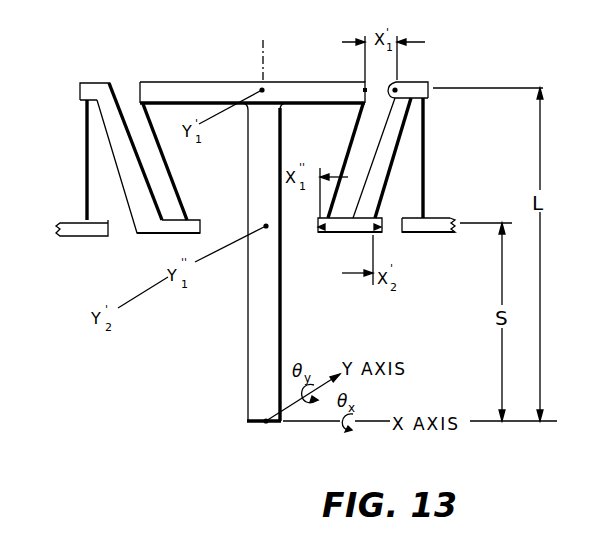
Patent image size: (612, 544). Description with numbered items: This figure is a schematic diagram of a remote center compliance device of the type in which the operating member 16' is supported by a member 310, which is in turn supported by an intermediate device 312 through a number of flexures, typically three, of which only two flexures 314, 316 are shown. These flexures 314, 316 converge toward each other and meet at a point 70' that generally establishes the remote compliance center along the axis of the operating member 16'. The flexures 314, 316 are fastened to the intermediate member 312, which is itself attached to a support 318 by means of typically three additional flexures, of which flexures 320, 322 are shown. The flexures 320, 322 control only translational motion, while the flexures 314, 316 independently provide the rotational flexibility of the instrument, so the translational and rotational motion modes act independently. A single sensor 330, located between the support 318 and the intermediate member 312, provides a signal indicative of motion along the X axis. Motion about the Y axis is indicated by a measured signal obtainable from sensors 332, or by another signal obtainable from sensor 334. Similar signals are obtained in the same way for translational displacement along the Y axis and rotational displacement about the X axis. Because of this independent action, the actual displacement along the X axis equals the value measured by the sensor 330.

The member 310 is at (293, 82).
The intermediate device 312 is at (157, 229).
The flexure 314 is at (178, 168).
The flexure 316 is at (352, 135).
The support 318 is at (435, 217).
The flexure 320 is at (88, 163).
The flexure 322 is at (425, 148).
The sensor 330 is at (403, 228).
The sensor 332 is at (398, 82).
The sensor 334 is at (318, 226).
The operating member 16' is at (283, 262).
The point 70' is at (282, 440).